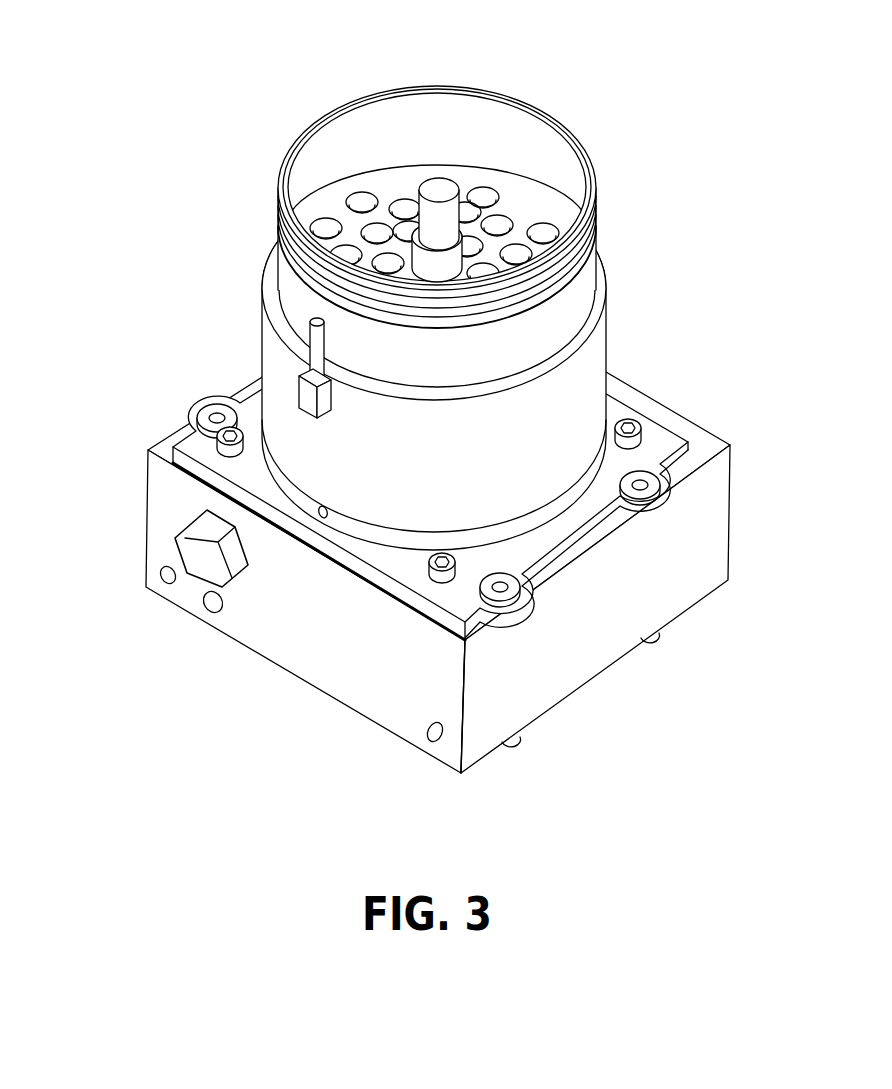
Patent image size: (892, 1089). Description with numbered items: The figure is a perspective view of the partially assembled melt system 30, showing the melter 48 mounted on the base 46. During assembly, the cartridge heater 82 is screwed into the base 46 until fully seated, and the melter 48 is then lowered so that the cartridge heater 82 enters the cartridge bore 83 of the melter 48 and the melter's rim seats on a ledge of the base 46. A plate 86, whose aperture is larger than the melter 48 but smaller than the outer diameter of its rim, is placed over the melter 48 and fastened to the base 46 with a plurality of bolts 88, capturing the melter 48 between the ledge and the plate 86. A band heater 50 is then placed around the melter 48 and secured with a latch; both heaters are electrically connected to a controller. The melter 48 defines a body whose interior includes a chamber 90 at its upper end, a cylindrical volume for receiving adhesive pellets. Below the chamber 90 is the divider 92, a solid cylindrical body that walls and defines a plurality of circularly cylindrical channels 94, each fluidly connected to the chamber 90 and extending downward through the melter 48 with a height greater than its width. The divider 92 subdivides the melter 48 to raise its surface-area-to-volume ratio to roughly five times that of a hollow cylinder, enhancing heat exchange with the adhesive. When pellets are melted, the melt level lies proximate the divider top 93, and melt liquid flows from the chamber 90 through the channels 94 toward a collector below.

The melt system 30 is at (140, 148).
The base 46 is at (330, 708).
The melter 48 is at (612, 200).
The band heater 50 is at (608, 340).
The cartridge heater 82 is at (482, 190).
The cartridge bore 83 is at (455, 268).
The plate 86 is at (683, 445).
The bolts 88 is at (227, 430).
The chamber 90 is at (477, 115).
The divider 92 is at (436, 162).
The divider top 93 is at (397, 183).
The channels 94 is at (325, 218).